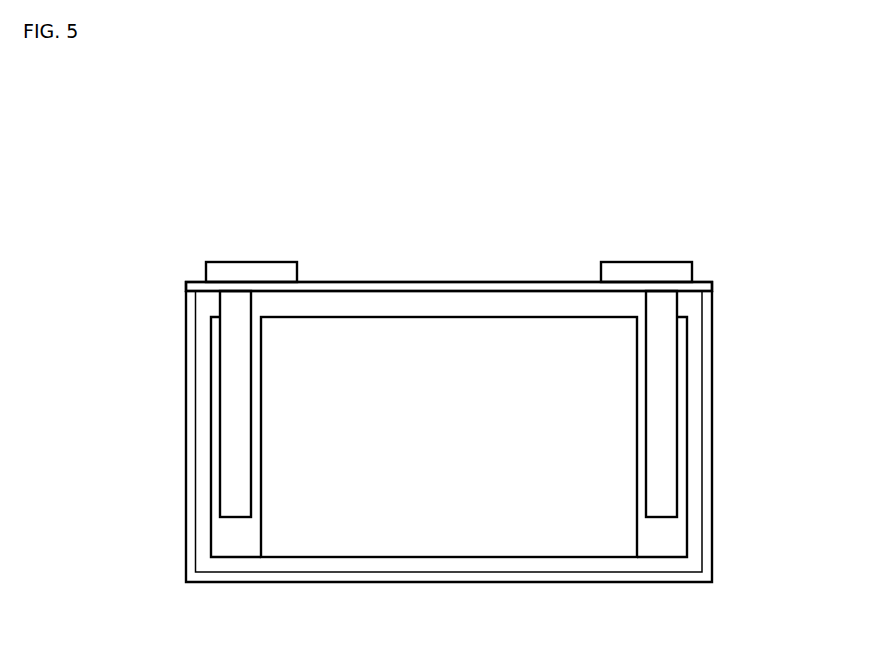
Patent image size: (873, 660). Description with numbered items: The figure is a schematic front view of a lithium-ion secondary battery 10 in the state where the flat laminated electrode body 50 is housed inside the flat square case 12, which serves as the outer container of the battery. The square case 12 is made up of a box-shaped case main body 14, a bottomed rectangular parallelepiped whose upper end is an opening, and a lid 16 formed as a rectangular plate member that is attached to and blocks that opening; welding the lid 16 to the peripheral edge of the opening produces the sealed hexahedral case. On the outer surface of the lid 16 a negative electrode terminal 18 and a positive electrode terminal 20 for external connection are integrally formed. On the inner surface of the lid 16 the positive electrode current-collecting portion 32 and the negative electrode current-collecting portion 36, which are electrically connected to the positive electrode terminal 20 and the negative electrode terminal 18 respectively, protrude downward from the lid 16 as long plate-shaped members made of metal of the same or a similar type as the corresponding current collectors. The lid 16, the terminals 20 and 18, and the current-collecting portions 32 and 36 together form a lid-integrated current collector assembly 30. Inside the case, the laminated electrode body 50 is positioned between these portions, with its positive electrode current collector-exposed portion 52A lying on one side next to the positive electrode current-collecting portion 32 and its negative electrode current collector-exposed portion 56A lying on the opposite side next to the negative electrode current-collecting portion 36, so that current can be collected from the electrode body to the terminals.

The lithium-ion secondary battery 10 is at (718, 200).
The square case 12 is at (713, 462).
The case main body 14 is at (713, 532).
The lid 16 is at (443, 282).
The lid-integrated current collector assembly 30 is at (449, 286).
The negative electrode terminal 18 is at (248, 262).
The positive electrode terminal 20 is at (662, 262).
The positive electrode current-collecting portion 32 is at (670, 425).
The negative electrode current-collecting portion 36 is at (228, 425).
The laminated electrode body 50 is at (553, 558).
The positive electrode current collector-exposed portion 52A is at (665, 550).
The negative electrode current collector-exposed portion 56A is at (237, 548).